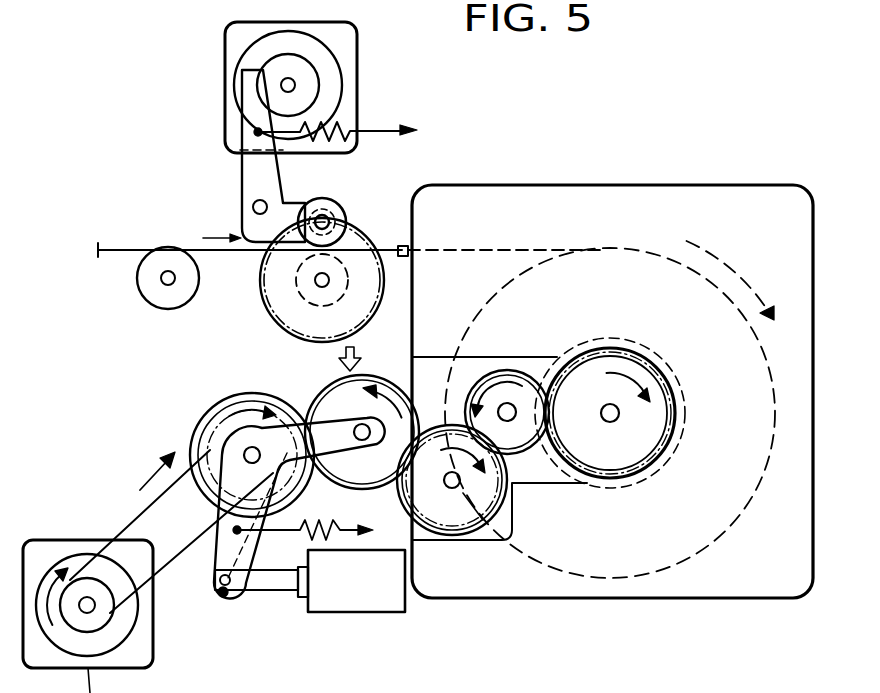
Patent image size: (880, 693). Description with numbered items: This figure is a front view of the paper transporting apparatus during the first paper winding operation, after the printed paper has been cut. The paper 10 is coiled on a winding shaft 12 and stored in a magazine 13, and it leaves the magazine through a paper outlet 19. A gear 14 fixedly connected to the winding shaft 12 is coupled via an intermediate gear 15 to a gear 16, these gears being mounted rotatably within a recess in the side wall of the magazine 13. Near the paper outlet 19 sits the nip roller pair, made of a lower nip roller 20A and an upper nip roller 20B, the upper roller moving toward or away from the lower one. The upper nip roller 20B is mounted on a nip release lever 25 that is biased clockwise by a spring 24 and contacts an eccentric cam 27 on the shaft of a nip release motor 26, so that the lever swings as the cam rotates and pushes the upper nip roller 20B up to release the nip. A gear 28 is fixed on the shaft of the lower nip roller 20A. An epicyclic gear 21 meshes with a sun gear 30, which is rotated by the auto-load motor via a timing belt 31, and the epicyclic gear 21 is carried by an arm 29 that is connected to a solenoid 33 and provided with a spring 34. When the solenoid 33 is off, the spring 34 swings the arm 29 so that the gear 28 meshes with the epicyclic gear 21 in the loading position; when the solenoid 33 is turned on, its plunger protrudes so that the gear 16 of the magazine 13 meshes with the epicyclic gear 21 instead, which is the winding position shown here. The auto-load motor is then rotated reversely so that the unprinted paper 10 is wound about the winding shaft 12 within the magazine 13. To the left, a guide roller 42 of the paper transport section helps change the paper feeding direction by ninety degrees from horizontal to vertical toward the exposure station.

The paper 10 is at (190, 249).
The winding shaft 12 is at (608, 337).
The magazine 13 is at (599, 150).
The gear 14 is at (637, 480).
The intermediate gear 15 is at (497, 372).
The gear 16 is at (455, 520).
The paper outlet 19 is at (405, 258).
The lower nip roller 20A is at (260, 257).
The upper nip roller 20B is at (337, 196).
The epicyclic gear 21 is at (330, 382).
The spring 24 is at (368, 126).
The nip release lever 25 is at (248, 173).
The nip release motor 26 is at (224, 53).
The eccentric cam 27 is at (317, 72).
The gear 28 is at (293, 318).
The arm 29 is at (328, 447).
The sun gear 30 is at (200, 420).
The timing belt 31 is at (133, 517).
The solenoid 33 is at (372, 612).
The spring 34 is at (318, 555).
The guide roller 42 is at (143, 290).